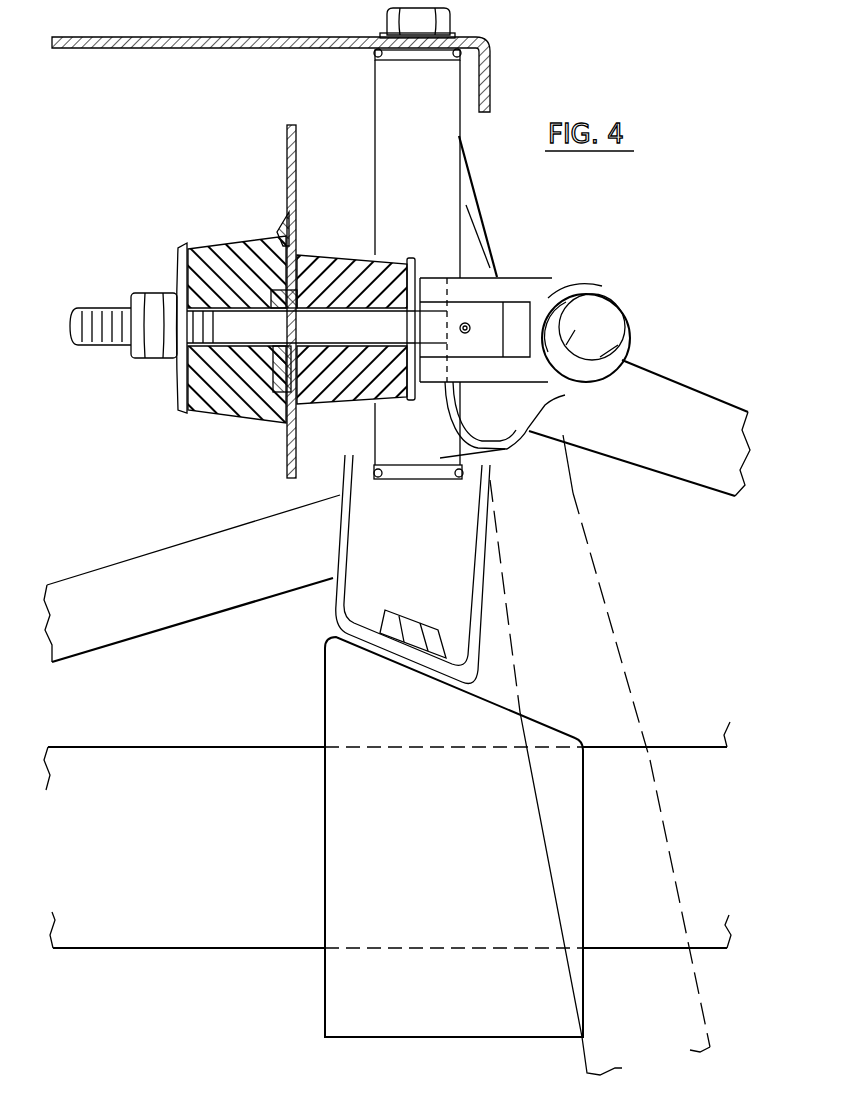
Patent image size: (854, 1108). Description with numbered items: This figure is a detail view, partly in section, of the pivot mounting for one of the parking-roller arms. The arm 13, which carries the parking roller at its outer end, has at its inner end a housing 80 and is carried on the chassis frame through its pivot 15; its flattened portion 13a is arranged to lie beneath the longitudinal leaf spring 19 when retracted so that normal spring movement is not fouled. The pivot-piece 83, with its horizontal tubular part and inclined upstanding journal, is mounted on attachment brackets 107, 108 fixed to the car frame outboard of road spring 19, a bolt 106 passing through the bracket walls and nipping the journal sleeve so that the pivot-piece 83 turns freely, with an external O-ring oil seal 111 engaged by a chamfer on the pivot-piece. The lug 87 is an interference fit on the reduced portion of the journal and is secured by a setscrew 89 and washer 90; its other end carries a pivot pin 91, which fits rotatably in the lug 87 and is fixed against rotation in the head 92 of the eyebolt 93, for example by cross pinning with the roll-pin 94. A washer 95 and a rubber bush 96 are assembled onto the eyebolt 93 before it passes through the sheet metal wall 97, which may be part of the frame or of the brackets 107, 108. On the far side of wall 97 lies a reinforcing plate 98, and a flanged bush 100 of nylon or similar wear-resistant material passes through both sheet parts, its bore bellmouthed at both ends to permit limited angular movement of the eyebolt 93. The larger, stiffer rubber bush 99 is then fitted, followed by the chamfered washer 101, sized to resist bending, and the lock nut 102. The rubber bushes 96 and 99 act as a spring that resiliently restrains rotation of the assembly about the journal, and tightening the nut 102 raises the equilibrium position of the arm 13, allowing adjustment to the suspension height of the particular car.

The arm 13 is at (651, 456).
The flattened portion 13a is at (653, 845).
The pivot 15 is at (598, 330).
The longitudinal leaf spring 19 is at (211, 757).
The housing 80 is at (537, 404).
The pivot-piece 83 is at (490, 241).
The lug 87 is at (563, 292).
The setscrew 89 is at (610, 326).
The washer 90 is at (588, 396).
The pivot pin 91 is at (482, 278).
The head 92 is at (433, 348).
The eyebolt 93 is at (330, 346).
The roll-pin 94 is at (468, 335).
The washer 95 is at (410, 257).
The rubber bush 96 is at (348, 262).
The sheet metal wall 97 is at (288, 150).
The reinforcing plate 98 is at (280, 226).
The rubber bush 99 is at (228, 418).
The flanged bush 100 is at (270, 393).
The chamfered washer 101 is at (178, 394).
The lock nut 102 is at (168, 354).
The bolt 106 is at (452, 22).
The attachment bracket 107 is at (489, 81).
The attachment bracket 108 is at (476, 584).
The O-ring oil seal 111 is at (462, 487).